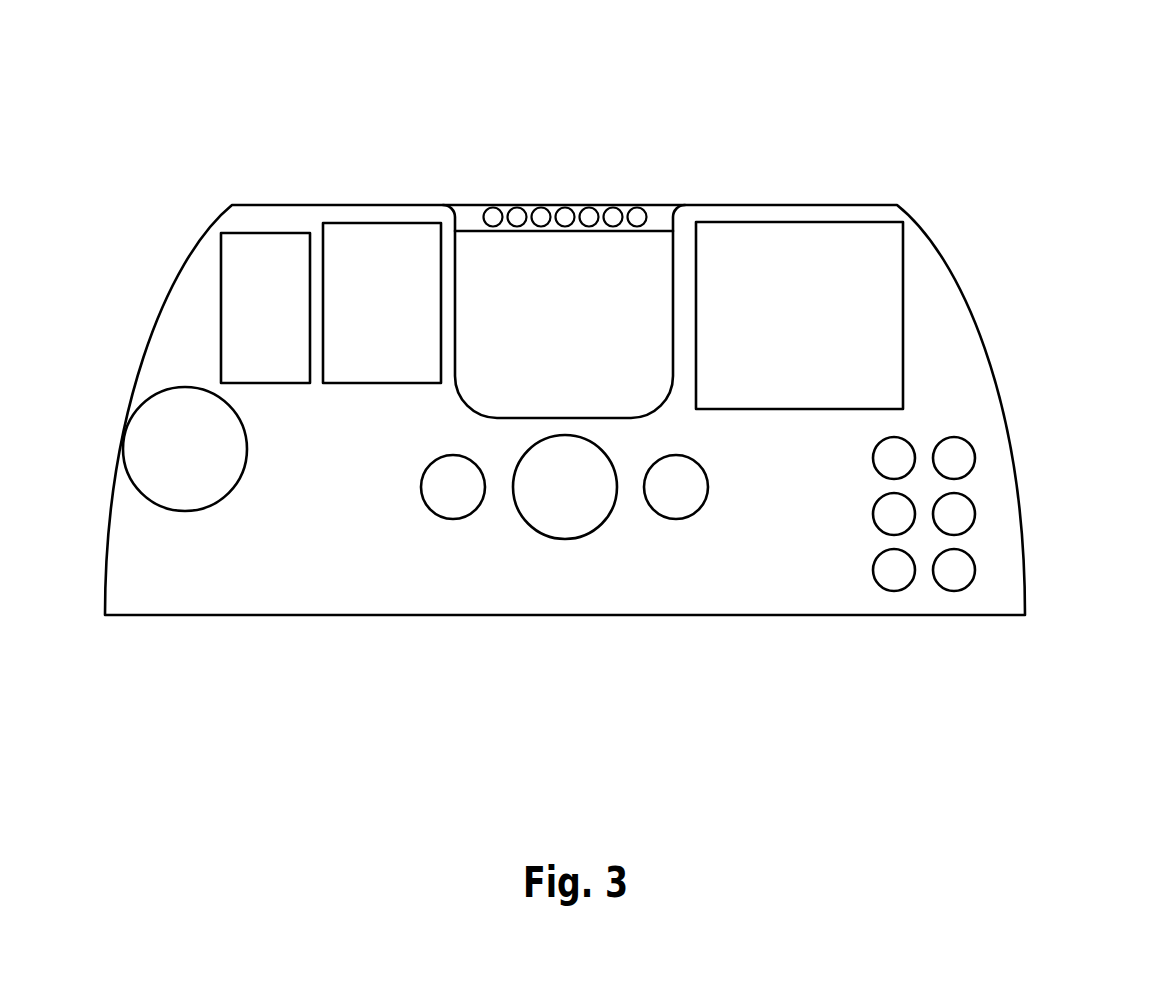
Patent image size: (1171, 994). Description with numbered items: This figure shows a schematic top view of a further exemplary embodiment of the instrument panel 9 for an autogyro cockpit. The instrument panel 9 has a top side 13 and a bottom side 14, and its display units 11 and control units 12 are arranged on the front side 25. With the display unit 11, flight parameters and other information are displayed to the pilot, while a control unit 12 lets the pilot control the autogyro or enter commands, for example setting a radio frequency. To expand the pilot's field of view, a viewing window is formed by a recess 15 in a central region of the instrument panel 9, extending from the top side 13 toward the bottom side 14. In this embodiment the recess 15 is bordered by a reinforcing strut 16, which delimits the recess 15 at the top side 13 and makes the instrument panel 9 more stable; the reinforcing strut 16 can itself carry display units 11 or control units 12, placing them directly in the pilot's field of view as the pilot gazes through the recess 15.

The instrument panel 9 is at (136, 133).
The display unit 11 is at (814, 267).
The control unit 12 is at (957, 458).
The top side 13 is at (328, 203).
The bottom side 14 is at (312, 615).
The recess 15 is at (637, 320).
The reinforcing strut 16 is at (475, 215).
The front side 25 is at (699, 560).